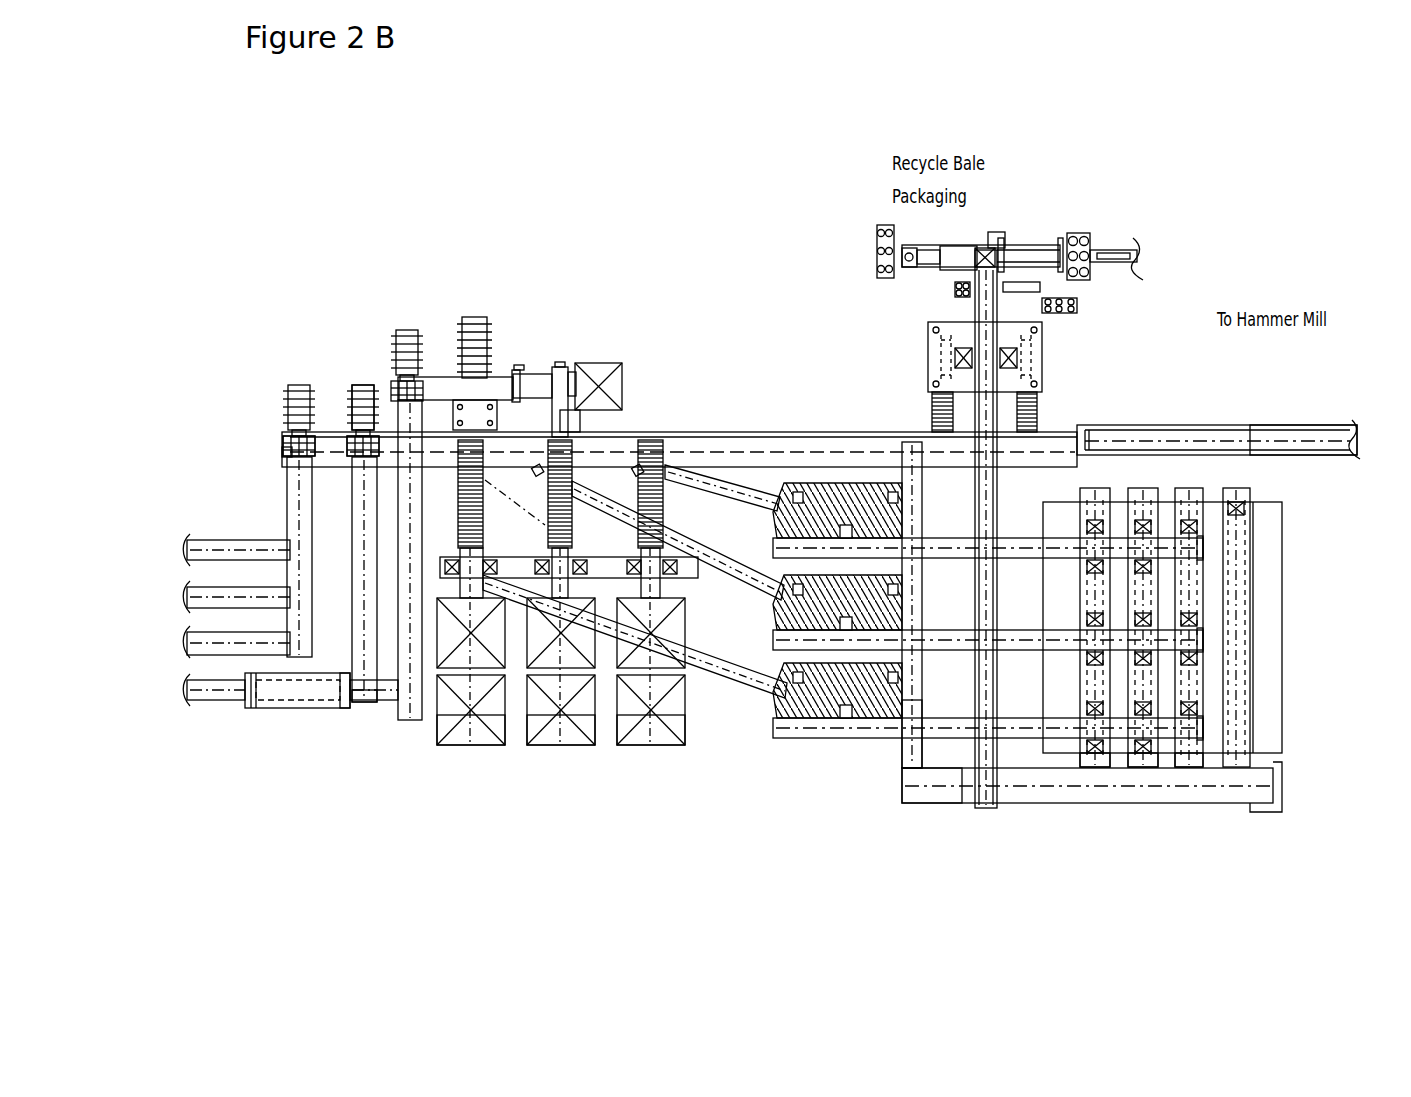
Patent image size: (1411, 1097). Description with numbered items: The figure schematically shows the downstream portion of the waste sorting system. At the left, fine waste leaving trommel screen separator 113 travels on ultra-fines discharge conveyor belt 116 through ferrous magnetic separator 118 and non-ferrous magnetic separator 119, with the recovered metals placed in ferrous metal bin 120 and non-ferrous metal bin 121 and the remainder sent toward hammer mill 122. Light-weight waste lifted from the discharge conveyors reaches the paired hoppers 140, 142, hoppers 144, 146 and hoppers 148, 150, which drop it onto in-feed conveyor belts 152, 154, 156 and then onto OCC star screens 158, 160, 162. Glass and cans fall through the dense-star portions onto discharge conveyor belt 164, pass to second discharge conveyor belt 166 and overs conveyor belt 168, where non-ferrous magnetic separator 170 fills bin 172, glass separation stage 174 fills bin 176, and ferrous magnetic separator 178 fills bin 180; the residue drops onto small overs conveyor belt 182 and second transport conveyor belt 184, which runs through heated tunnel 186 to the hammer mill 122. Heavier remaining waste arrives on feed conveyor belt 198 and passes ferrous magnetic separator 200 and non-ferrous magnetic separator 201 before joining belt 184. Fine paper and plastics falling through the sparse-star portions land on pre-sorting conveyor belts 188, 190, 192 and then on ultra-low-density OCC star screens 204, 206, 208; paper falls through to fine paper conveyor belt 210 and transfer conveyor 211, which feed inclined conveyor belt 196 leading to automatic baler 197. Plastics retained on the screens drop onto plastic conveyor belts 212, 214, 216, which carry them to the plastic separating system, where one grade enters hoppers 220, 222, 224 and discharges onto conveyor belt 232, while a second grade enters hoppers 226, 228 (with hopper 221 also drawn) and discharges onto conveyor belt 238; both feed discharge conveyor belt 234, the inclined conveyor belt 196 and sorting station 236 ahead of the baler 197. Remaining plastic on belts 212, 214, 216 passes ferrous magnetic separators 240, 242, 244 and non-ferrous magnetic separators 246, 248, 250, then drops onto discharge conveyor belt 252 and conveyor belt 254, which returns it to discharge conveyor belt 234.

The trommel screen separator 113 is at (295, 690).
The ultra-fines discharge conveyor belt 116 is at (365, 647).
The ferrous magnetic separator 118 is at (347, 428).
The non-ferrous magnetic separator 119 is at (365, 383).
The ferrous metal bin 120 is at (352, 385).
The non-ferrous metal bin 121 is at (280, 418).
The hammer mill 122 is at (1278, 443).
The hopper 140 is at (672, 668).
The hopper 142 is at (625, 745).
The hopper 144 is at (582, 668).
The hopper 146 is at (535, 745).
The hopper 148 is at (492, 668).
The hopper 150 is at (485, 722).
The in-feed conveyor belt 152 is at (665, 722).
The in-feed conveyor belt 154 is at (575, 722).
The in-feed conveyor belt 156 is at (445, 745).
The OCC star screen 158 is at (652, 470).
The OCC star screen 160 is at (555, 437).
The OCC star screen 162 is at (460, 470).
The discharge conveyor belt 164 is at (460, 552).
The second discharge conveyor belt 166 is at (411, 653).
The overs conveyor belt 168 is at (507, 378).
The non-ferrous magnetic separator 170 is at (373, 387).
The bin 172 is at (398, 397).
The glass separation stage 174 is at (497, 417).
The bin 176 is at (475, 318).
The ferrous magnetic separator 178 is at (560, 400).
The bin 180 is at (610, 365).
The small overs conveyor belt 182 is at (568, 422).
The second transport conveyor belt 184 is at (740, 430).
The heated tunnel 186 is at (1168, 428).
The pre-sorting conveyor belt 188 is at (755, 490).
The pre-sorting conveyor belt 190 is at (672, 532).
The pre-sorting conveyor belt 192 is at (765, 685).
The inclined conveyor belt 196 is at (985, 808).
The automatic baler 197 is at (1005, 250).
The feed conveyor belt 198 is at (313, 603).
The ferrous magnetic separator 200 is at (280, 440).
The non-ferrous magnetic separator 201 is at (280, 455).
The OCC star screen 204 is at (817, 487).
The OCC star screen 206 is at (773, 612).
The OCC star screen 208 is at (905, 700).
The fine paper conveyor belt 210 is at (900, 765).
The transfer conveyor 211 is at (912, 806).
The plastic conveyor belt 212 is at (773, 548).
The plastic conveyor belt 214 is at (1035, 638).
The plastic conveyor belt 216 is at (1035, 728).
The hopper 220 is at (1090, 525).
The guide column 221 is at (1135, 525).
The hopper 222 is at (1085, 620).
The hopper 224 is at (1085, 710).
The hopper 226 is at (1190, 612).
The hopper 228 is at (1200, 608).
The conveyor belt 232 is at (1095, 770).
The discharge conveyor belt 234 is at (1048, 786).
The sorting station 236 is at (1027, 358).
The conveyor belt 238 is at (1143, 770).
The ferrous magnetic separator 240 is at (1158, 567).
The ferrous magnetic separator 242 is at (1200, 648).
The ferrous magnetic separator 244 is at (1210, 735).
The non-ferrous magnetic separator 246 is at (1205, 542).
The non-ferrous magnetic separator 248 is at (1203, 618).
The non-ferrous magnetic separator 250 is at (1200, 706).
The discharge conveyor belt 252 is at (1237, 770).
The conveyor belt 254 is at (1190, 770).